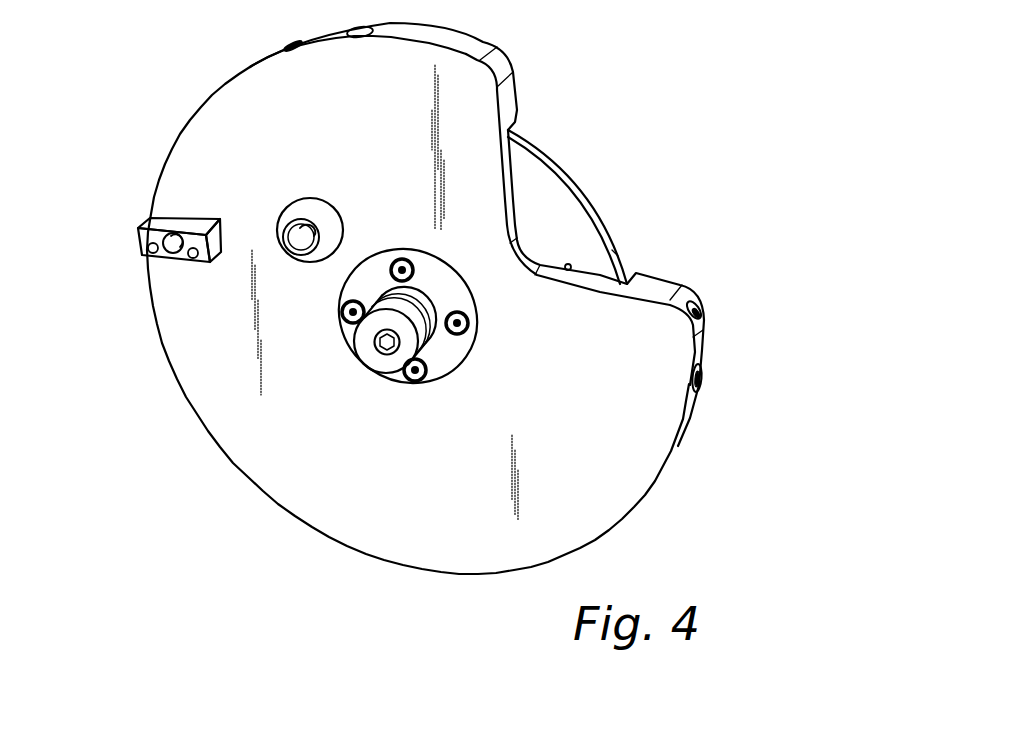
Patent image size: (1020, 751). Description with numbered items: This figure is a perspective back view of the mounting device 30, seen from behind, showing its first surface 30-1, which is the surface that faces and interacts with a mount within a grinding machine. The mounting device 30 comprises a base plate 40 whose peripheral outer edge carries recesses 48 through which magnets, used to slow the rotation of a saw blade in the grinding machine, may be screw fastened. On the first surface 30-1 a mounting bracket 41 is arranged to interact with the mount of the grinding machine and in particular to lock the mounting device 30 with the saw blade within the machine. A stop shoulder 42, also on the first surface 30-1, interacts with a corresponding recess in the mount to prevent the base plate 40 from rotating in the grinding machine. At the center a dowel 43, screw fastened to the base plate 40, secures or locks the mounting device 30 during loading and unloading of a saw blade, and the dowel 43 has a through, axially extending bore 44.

The mounting device 30 is at (756, 106).
The first surface 30-1 is at (473, 491).
The base plate 40 is at (700, 353).
The mounting bracket 41 is at (308, 202).
The stop shoulder 42 is at (143, 234).
The dowel 43 is at (352, 337).
The bore 44 is at (382, 347).
The recesses 48 is at (697, 383).